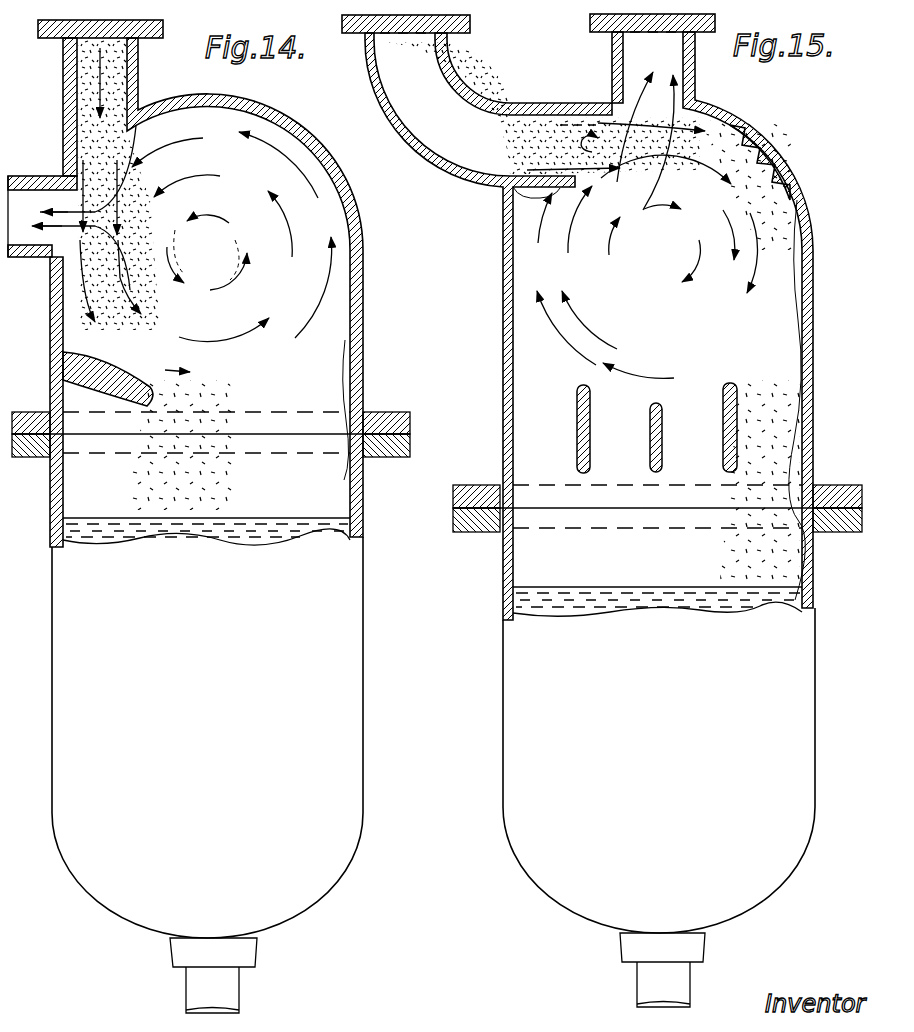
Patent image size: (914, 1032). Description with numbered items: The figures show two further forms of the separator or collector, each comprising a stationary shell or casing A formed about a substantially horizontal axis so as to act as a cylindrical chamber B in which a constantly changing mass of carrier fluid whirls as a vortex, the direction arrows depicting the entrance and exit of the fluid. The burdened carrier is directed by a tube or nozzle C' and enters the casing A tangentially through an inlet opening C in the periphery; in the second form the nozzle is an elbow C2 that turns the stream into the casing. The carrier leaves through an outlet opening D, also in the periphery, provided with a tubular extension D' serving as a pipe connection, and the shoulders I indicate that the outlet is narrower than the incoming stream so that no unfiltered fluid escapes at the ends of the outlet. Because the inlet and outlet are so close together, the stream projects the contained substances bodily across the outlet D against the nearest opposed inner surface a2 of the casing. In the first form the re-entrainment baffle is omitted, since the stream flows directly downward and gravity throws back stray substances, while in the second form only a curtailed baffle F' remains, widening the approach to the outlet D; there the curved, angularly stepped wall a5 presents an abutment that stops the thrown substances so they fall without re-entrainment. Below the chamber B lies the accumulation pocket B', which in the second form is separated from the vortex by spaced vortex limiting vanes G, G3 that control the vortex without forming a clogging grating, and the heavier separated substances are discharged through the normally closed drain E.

In FIG. 14, the shell or casing A is at (350, 202).
In FIG. 15, the shell or casing A is at (811, 235).
In FIG. 14, the chamber or container B is at (249, 237).
In FIG. 15, the chamber or container B is at (647, 282).
In FIG. 14, the pocket B' is at (206, 462).
In FIG. 15, the pocket B' is at (657, 498).
In FIG. 14, the inlet opening C is at (150, 230).
In FIG. 15, the inlet opening C is at (588, 142).
In FIG. 14, the tube or nozzle C' is at (109, 175).
In FIG. 15, the tube or nozzle C' is at (434, 71).
In FIG. 15, the inlet elbow C2 is at (532, 326).
In FIG. 14, the outlet opening D is at (70, 186).
In FIG. 15, the outlet opening D is at (627, 138).
In FIG. 14, the tubular extension D' is at (42, 232).
In FIG. 15, the tubular extension D' is at (652, 58).
In FIG. 14, the shoulder I is at (52, 278).
In FIG. 15, the shoulder I is at (720, 105).
In FIG. 14, the inner surface of the casing a2 is at (127, 367).
In FIG. 15, the angularly ribbed or stepped wall a5 is at (745, 165).
In FIG. 15, the inlet junction F' is at (504, 212).
In FIG. 15, the vortex limiting member G is at (650, 438).
In FIG. 15, the grate bar G3 is at (740, 438).
In FIG. 14, the drain or opening E is at (222, 953).
In FIG. 15, the drain or opening E is at (655, 952).